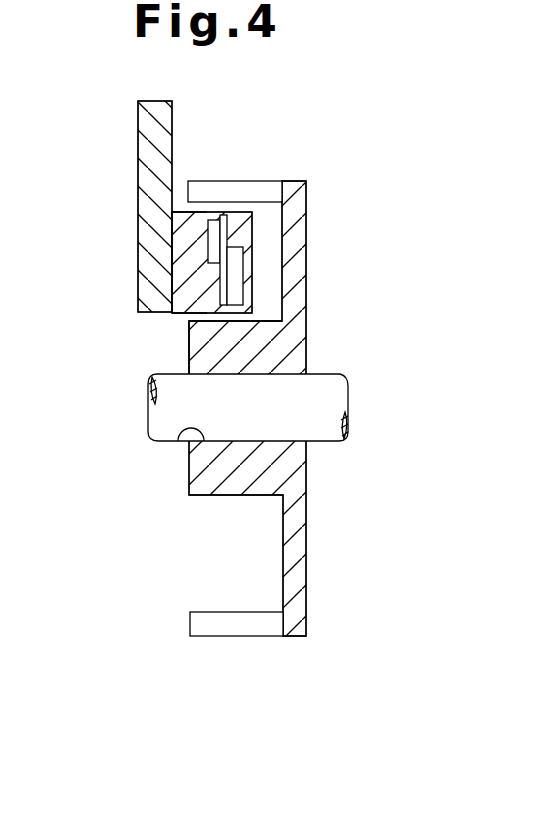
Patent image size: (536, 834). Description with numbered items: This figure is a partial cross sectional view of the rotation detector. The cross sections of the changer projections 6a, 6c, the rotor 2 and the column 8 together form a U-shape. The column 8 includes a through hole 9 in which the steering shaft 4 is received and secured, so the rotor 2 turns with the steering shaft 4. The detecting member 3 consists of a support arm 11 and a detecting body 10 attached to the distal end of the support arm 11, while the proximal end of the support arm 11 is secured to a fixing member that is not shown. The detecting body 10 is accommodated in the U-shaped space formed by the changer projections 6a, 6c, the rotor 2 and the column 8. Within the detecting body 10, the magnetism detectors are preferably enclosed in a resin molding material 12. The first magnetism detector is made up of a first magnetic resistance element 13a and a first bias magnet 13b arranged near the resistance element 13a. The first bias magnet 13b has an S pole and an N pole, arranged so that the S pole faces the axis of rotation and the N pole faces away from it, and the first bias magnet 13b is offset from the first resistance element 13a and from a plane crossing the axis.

The rotor 2 is at (248, 411).
The detecting member 3 is at (224, 223).
The steering shaft 4 is at (325, 440).
The changer projection 6a is at (239, 185).
The changer projection 6c is at (237, 630).
The column 8 is at (189, 343).
The through hole 9 is at (178, 443).
The detecting body 10 is at (224, 278).
The support arm 11 is at (142, 115).
The resin molding material 12 is at (177, 232).
The first magnetic resistance element 13a is at (203, 260).
The first bias magnet 13b is at (245, 268).